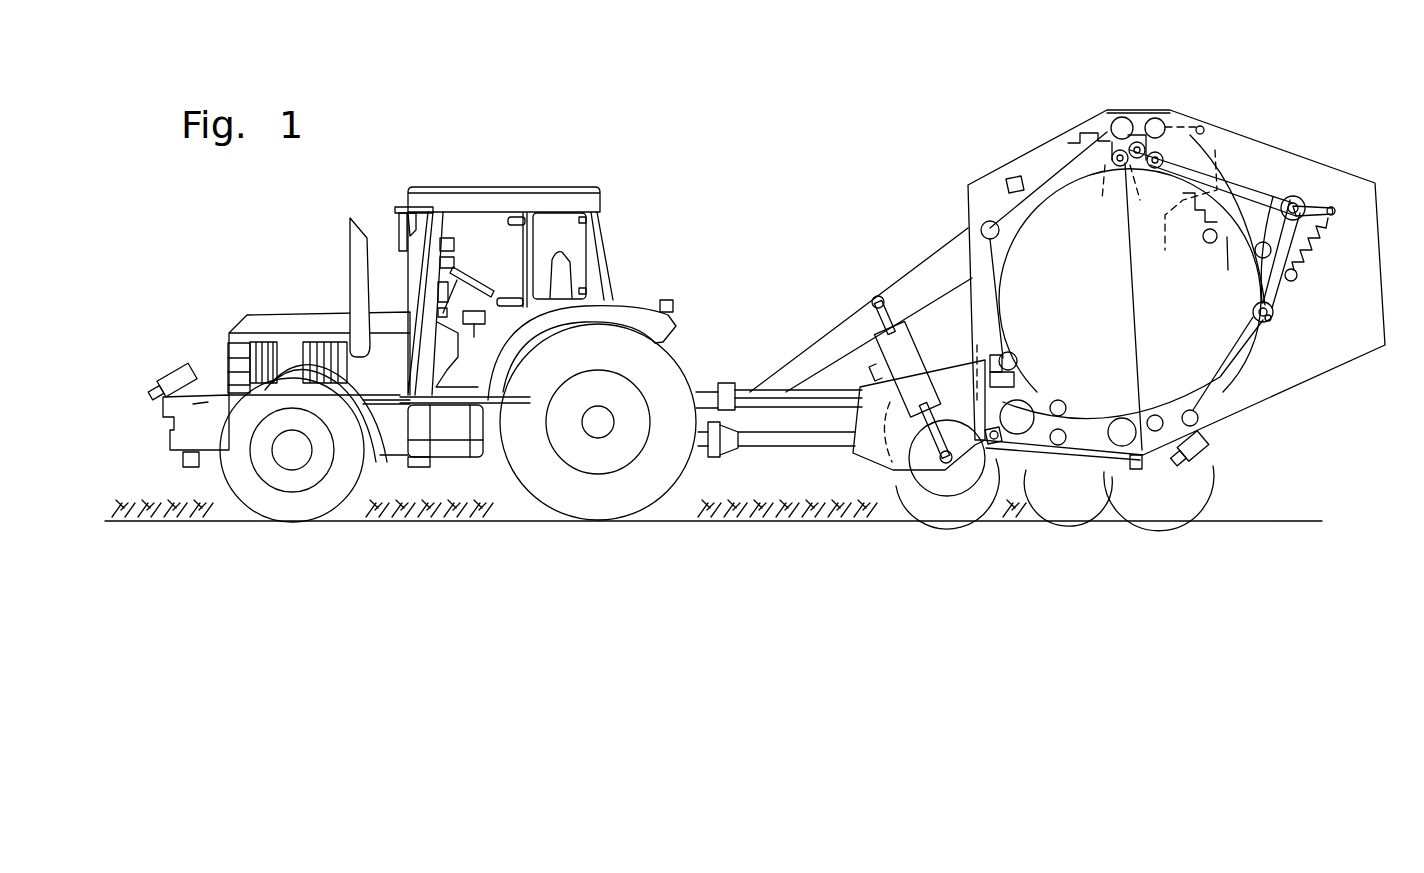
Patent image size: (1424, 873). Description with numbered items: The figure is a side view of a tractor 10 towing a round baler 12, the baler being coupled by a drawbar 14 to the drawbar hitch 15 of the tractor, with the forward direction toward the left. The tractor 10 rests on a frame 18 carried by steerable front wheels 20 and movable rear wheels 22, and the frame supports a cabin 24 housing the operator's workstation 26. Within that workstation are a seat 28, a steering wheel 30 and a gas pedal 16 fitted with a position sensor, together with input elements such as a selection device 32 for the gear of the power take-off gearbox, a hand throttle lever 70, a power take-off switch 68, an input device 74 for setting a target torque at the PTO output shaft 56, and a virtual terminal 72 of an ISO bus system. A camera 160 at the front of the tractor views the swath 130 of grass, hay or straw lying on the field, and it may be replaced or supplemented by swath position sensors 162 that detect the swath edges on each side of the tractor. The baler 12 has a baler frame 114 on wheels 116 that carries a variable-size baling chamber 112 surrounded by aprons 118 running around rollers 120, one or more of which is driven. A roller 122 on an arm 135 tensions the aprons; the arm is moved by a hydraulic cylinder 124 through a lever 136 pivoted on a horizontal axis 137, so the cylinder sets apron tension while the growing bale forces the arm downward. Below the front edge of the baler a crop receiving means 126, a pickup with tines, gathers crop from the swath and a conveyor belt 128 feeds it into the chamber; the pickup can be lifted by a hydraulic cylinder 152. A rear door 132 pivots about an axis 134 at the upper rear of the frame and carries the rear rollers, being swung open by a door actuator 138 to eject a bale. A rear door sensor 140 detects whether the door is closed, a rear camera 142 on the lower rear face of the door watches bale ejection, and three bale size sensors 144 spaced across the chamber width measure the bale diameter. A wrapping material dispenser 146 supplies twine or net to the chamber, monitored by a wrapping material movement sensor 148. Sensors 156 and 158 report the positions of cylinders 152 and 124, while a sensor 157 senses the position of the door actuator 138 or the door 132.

The tractor 10 is at (435, 183).
The round baler 12 is at (1336, 140).
The drawbar 14 is at (830, 335).
The drawbar hitch 15 is at (722, 383).
The gas pedal 16 is at (443, 378).
The frame 18 is at (392, 420).
The steerable front wheels 20 is at (292, 500).
The rear wheels 22 is at (602, 490).
The cabin 24 is at (436, 234).
The operator's workstation 26 is at (512, 280).
The seat 28 is at (565, 262).
The steering wheel 30 is at (472, 272).
The selection device 32 is at (437, 288).
The PTO output shaft 56 is at (727, 452).
The power take-off switch 68 is at (437, 312).
The hand throttle lever 70 is at (478, 336).
The virtual terminal 72 is at (412, 236).
The input device 74 is at (398, 216).
The baling chamber 112 is at (1082, 312).
The baler frame 114 is at (1085, 505).
The wheels 116 is at (1190, 500).
The aprons 118 is at (1003, 293).
The rollers 120 is at (1016, 356).
The roller 122 is at (1268, 322).
The hydraulic cylinder 124 is at (1193, 242).
The crop receiving means 126 is at (957, 482).
The conveyor belt 128 is at (1035, 442).
The swath 130 is at (130, 498).
The rear door 132 is at (1378, 195).
The axis 134 is at (1121, 120).
The arm 135 is at (1283, 272).
The lever 136 is at (1256, 311).
The horizontal axis 137 is at (1294, 196).
The door actuator 138 is at (1102, 170).
The rear door sensor 140 is at (1139, 470).
The rear camera 142 is at (1205, 450).
The bale size sensors 144 is at (1006, 182).
The wrapping material dispenser 146 is at (1018, 378).
The wrapping material movement sensor 148 is at (985, 360).
The hydraulic cylinder 152 is at (900, 330).
The sensor 156 is at (830, 392).
The sensor 157 is at (1103, 114).
The sensor 158 is at (1195, 195).
The camera 160 is at (176, 366).
The swath position sensors 162 is at (193, 468).